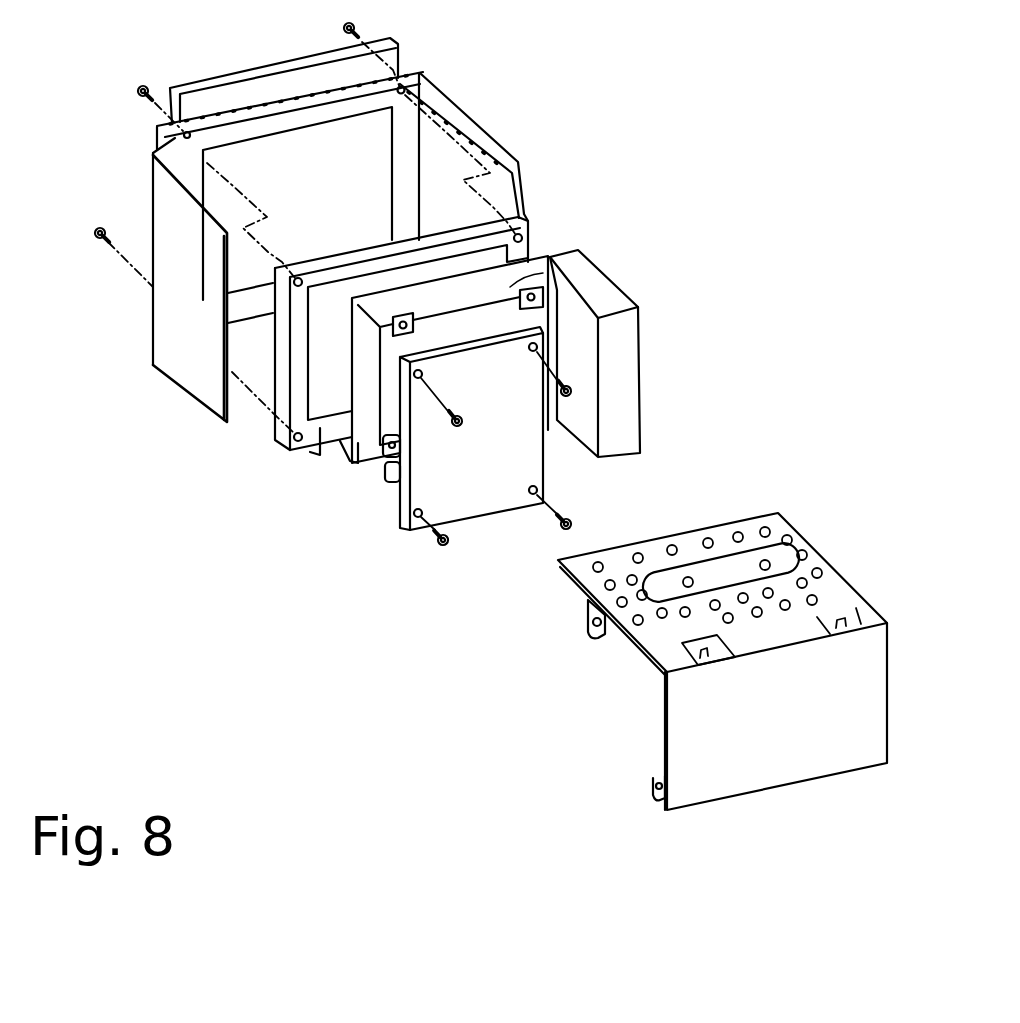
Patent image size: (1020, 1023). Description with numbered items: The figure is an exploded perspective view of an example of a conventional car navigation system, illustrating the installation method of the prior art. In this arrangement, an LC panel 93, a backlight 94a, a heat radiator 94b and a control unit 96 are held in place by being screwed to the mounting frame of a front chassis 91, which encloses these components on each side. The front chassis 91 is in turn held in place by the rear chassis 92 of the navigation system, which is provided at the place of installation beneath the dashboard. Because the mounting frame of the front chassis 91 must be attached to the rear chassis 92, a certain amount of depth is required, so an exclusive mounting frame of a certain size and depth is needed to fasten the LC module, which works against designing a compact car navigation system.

The front chassis 91 is at (443, 125).
The rear chassis 92 is at (738, 527).
The LC panel 93 is at (527, 220).
The backlight 94a is at (556, 262).
The heat radiator 94b is at (612, 300).
The control unit 96 is at (475, 507).